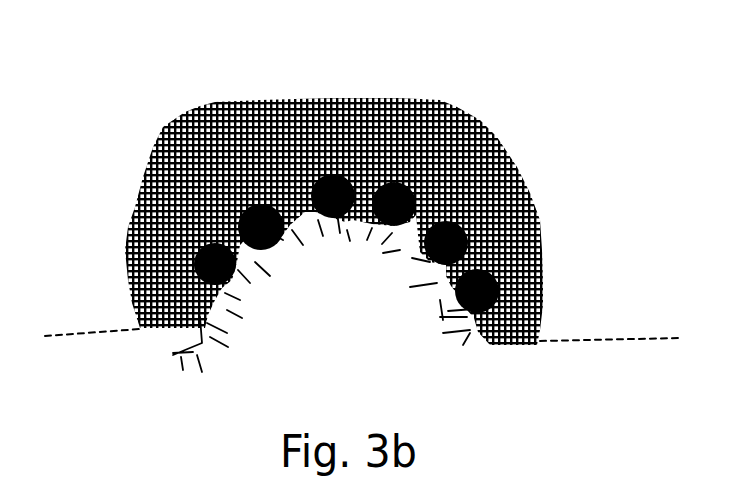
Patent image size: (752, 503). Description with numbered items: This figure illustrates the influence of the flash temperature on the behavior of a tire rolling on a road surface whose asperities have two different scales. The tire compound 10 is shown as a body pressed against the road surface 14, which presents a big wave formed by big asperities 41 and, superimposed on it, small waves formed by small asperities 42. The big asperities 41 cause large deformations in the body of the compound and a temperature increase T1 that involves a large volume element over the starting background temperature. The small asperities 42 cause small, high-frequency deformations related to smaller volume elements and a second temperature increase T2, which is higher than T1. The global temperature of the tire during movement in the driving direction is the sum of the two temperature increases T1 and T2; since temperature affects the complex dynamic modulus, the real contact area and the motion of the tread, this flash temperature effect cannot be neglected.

The hatched body layer 10 is at (173, 253).
The lower contour / base 14 is at (173, 355).
The big asperities 41 is at (340, 310).
The small asperities 42 is at (443, 312).
The first temperature increase T1 is at (484, 147).
The second temperature increase T2 is at (512, 292).